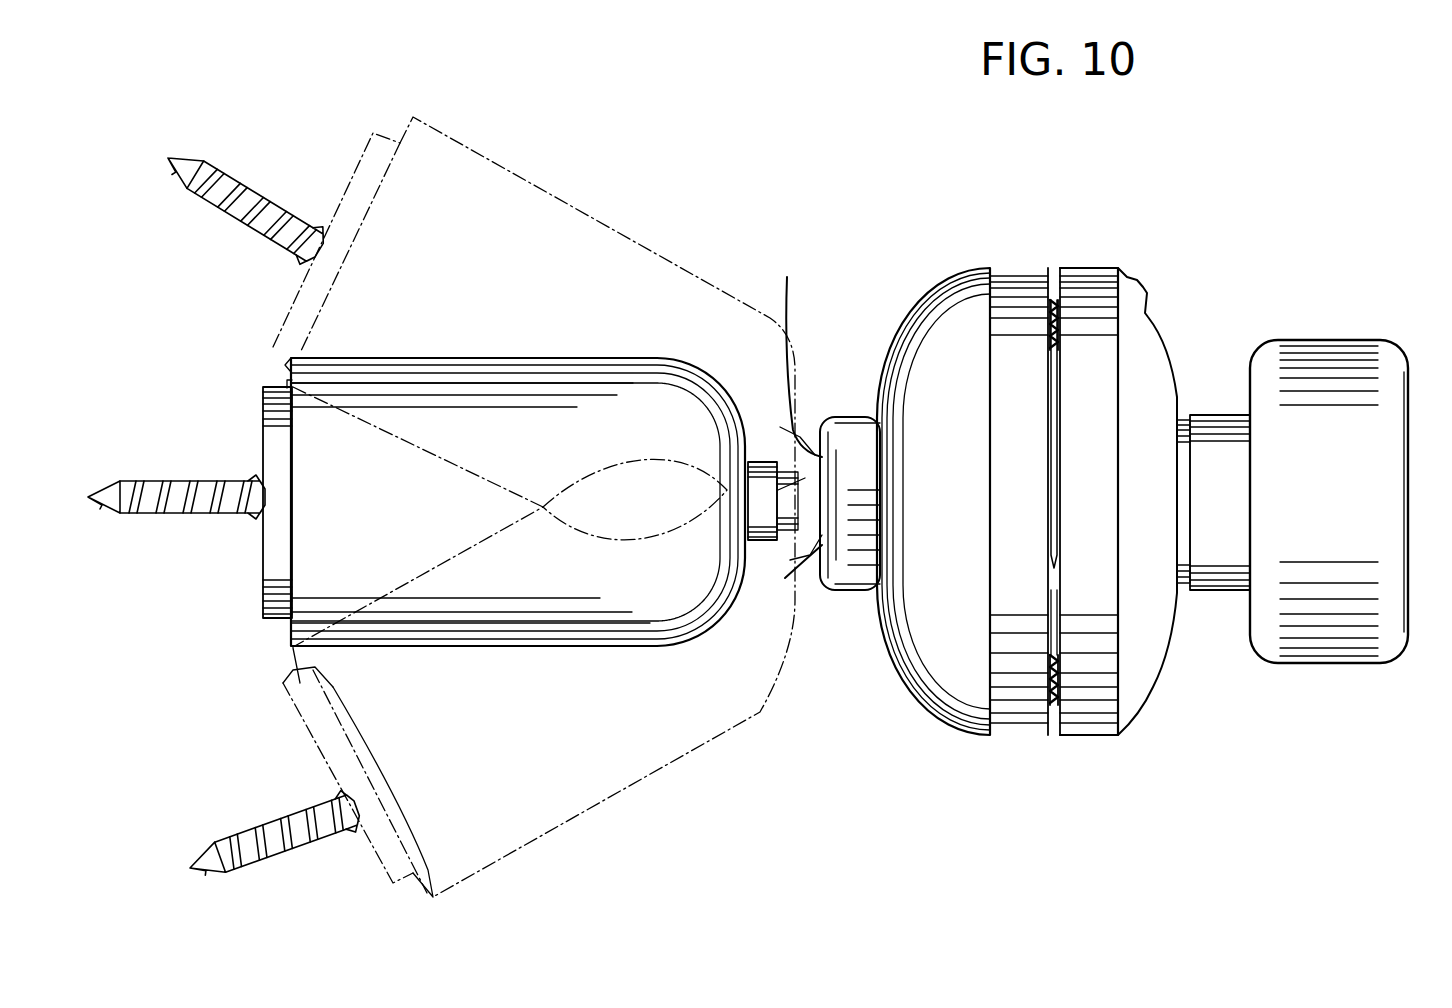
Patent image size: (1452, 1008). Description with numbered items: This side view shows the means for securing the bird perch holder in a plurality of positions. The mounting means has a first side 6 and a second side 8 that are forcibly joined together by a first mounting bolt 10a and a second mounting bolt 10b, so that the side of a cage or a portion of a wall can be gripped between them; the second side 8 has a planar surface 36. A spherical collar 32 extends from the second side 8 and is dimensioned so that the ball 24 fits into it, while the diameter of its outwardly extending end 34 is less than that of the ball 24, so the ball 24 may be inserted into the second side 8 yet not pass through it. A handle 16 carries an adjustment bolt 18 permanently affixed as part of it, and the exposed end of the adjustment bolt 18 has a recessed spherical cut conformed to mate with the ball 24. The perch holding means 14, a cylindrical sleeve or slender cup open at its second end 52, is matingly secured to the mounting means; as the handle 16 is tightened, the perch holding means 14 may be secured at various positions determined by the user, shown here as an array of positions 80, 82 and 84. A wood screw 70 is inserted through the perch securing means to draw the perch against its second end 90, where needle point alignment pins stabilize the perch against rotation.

The first side 6 is at (1088, 268).
The second side 8 is at (945, 290).
The first mounting bolt 10a is at (1050, 330).
The second mounting bolt 10b is at (1050, 680).
The perch holding means 14 is at (535, 166).
The handle 16 is at (1350, 340).
The adjustment bolt 18 is at (1054, 498).
The ball 24 is at (787, 290).
The spherical collar 32 is at (862, 592).
The outwardly extending end 34 is at (798, 535).
The planar surface 36 is at (1058, 727).
The second end 52 is at (293, 357).
The wood screw 70 is at (700, 377).
The position 80 is at (247, 146).
The position 82 is at (154, 473).
The position 84 is at (227, 827).
The second end 90 is at (263, 550).